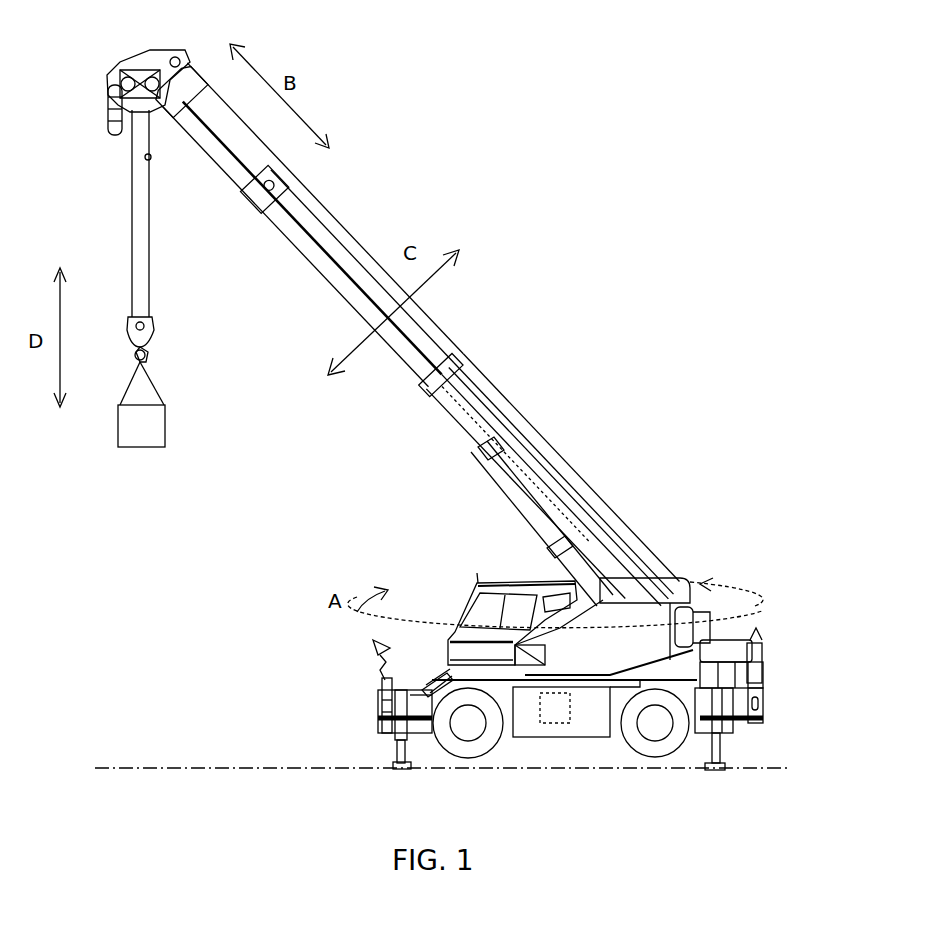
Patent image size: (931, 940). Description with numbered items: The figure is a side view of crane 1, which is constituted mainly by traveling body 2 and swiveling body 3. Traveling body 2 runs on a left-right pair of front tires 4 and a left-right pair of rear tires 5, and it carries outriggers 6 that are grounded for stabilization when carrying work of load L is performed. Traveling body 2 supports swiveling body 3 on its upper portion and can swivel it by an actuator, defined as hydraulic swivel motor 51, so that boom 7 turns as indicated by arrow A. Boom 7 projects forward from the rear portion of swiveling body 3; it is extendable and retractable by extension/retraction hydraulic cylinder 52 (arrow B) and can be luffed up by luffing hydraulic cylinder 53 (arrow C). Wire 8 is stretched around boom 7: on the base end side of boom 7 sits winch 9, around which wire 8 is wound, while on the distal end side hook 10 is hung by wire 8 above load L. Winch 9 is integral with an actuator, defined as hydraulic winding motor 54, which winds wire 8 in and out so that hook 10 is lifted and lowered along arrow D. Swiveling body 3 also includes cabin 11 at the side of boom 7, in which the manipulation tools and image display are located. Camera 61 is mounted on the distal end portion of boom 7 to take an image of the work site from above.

The crane 1 is at (685, 320).
The traveling body 2 is at (805, 671).
The swiveling body 3 is at (718, 566).
The front tires 4 is at (466, 756).
The rear tires 5 is at (658, 756).
The outriggers 6 is at (392, 752).
The boom 7 is at (334, 232).
The wire 8 is at (610, 502).
The winch 9 is at (588, 603).
The hydraulic winding motor 54 is at (695, 622).
The hook 10 is at (134, 358).
The cabin 11 is at (440, 586).
The hydraulic swivel motor 51 is at (546, 726).
The extension/retraction hydraulic cylinder 52 is at (533, 428).
The luffing hydraulic cylinder 53 is at (515, 506).
The camera 61 is at (145, 62).
The load L is at (130, 450).